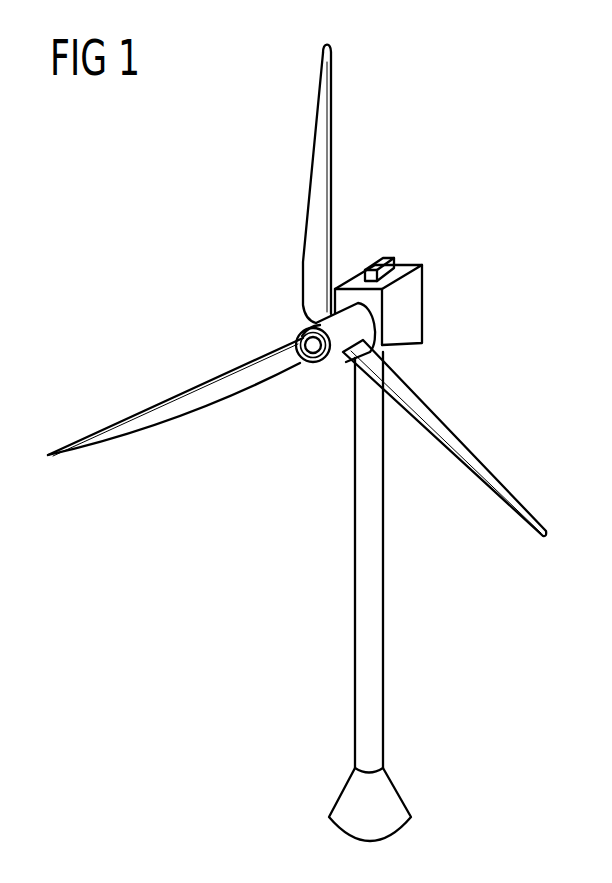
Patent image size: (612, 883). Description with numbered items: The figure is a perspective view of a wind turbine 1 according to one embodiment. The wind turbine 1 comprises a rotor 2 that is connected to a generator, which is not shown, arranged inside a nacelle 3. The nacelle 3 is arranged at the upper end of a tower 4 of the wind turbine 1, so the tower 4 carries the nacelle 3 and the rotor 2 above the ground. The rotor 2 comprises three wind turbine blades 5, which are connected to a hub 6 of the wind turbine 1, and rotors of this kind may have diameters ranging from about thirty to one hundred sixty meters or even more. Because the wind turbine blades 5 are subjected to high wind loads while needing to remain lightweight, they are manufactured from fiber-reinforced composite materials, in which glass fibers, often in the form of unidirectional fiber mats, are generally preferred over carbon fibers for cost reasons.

The wind turbine 1 is at (168, 211).
The rotor 2 is at (158, 391).
The nacelle 3 is at (412, 302).
The tower 4 is at (372, 673).
The wind turbine blade 5 is at (322, 182).
The hub 6 is at (357, 323).